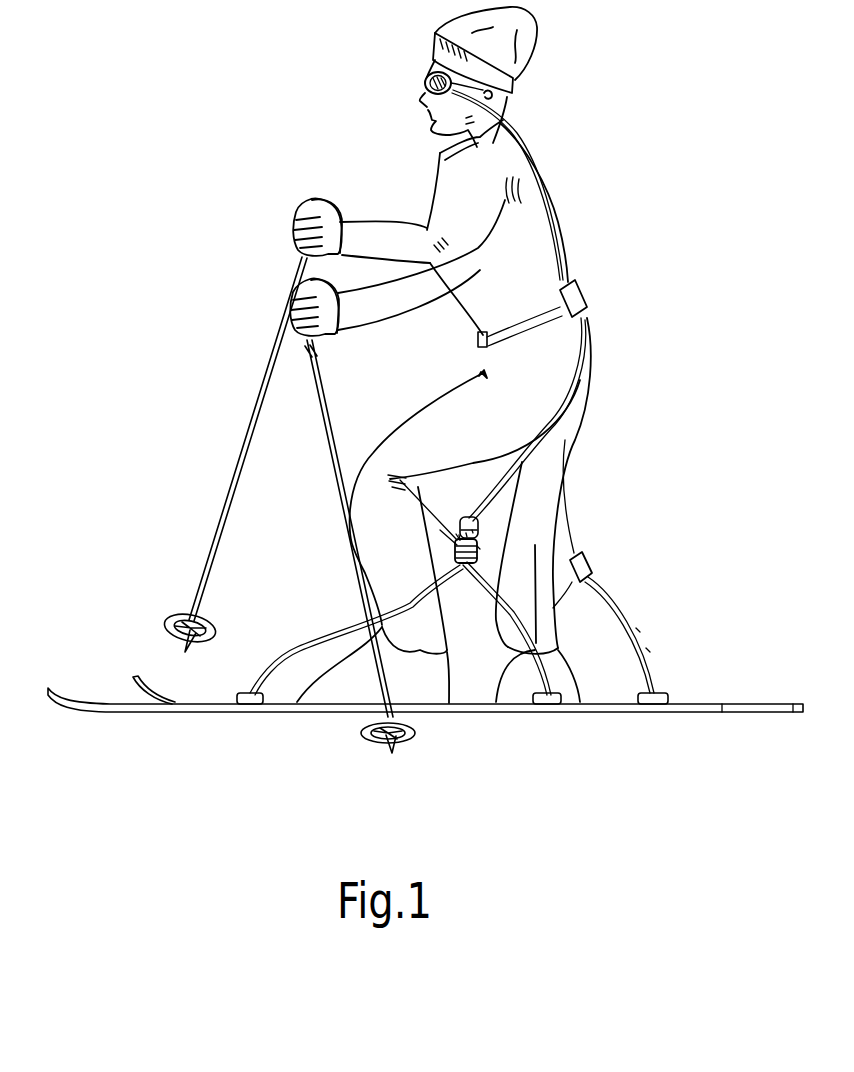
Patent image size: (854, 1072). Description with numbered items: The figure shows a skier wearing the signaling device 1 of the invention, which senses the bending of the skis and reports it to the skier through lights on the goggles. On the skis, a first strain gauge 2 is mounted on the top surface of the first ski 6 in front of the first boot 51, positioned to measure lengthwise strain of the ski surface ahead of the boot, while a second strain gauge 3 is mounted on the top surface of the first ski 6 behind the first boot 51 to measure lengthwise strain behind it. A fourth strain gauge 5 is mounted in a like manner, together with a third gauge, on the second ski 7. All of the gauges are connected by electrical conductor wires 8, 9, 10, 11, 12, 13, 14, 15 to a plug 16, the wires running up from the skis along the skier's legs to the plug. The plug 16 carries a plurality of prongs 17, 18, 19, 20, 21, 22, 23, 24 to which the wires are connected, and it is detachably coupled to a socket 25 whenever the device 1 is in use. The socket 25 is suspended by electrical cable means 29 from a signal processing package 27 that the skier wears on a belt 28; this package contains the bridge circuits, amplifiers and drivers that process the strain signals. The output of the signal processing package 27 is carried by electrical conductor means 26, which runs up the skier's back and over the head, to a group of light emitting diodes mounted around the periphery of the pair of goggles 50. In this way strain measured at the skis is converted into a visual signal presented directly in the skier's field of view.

The signaling device 1 is at (587, 284).
The first strain gauge 2 is at (243, 699).
The second strain gauge 3 is at (557, 700).
The fourth strain gauge 5 is at (667, 697).
The first ski 6 is at (90, 704).
The second ski 7 is at (133, 677).
The electrical conductor wire 8 is at (330, 635).
The electrical conductor wire 9 is at (400, 603).
The electrical conductor wire 10 is at (503, 612).
The electrical conductor wire 11 is at (487, 590).
The electrical conductor wire 12 is at (575, 553).
The electrical conductor wire 13 is at (553, 607).
The electrical conductor wire 14 is at (647, 650).
The electrical conductor wire 15 is at (638, 630).
The plug 16 is at (477, 558).
The prong 17 is at (457, 545).
The prong 18 is at (400, 480).
The prong 19 is at (460, 540).
The prong 20 is at (479, 548).
The prong 21 is at (460, 540).
The prong 22 is at (467, 537).
The prong 23 is at (473, 533).
The prong 24 is at (477, 542).
The socket 25 is at (477, 540).
The electrical conductor means 26 is at (550, 193).
The signal processing package 27 is at (587, 306).
The belt 28 is at (480, 340).
The cable means 29 is at (573, 368).
The goggles 50 is at (424, 78).
The first boot 51 is at (317, 693).